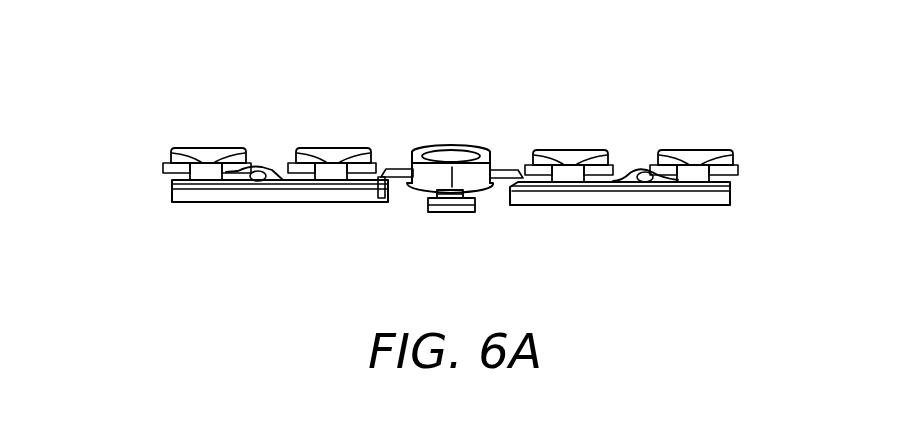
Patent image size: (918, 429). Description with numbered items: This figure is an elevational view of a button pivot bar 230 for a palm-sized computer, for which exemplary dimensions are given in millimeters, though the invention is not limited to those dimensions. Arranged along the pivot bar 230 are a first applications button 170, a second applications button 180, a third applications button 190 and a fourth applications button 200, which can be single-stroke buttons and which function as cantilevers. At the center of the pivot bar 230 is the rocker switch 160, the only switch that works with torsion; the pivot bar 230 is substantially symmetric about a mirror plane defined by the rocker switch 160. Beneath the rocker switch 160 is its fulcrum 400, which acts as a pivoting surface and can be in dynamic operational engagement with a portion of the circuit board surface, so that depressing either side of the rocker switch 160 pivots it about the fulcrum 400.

The rocker switch 160 is at (447, 147).
The first applications button 170 is at (185, 150).
The second applications button 180 is at (328, 148).
The third applications button 190 is at (573, 151).
The fourth applications button 200 is at (695, 152).
The pivot bar 230 is at (268, 170).
The fulcrum 400 is at (450, 212).